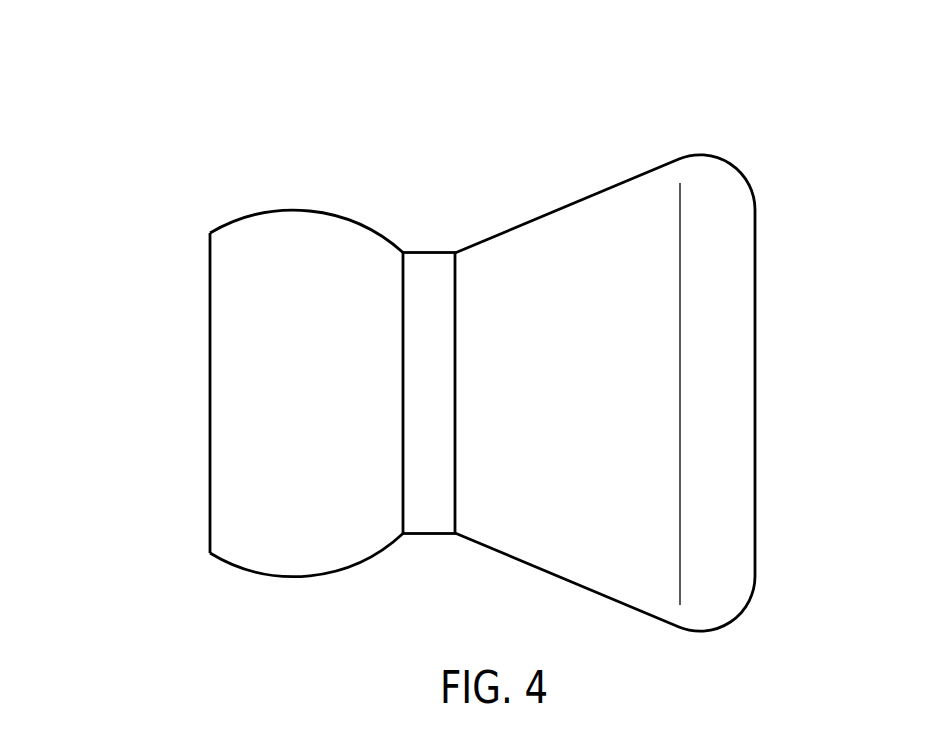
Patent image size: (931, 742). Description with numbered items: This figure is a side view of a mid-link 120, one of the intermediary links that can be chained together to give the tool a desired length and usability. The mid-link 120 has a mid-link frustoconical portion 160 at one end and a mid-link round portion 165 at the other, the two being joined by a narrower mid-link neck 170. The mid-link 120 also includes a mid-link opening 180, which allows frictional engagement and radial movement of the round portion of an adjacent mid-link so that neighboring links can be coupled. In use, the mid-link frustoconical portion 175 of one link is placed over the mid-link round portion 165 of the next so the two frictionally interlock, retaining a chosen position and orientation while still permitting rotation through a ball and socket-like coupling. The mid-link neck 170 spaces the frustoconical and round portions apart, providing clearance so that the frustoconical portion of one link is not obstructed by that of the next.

The mid-link 120 is at (113, 198).
The mid-link frustoconical portion 160 is at (710, 177).
The mid-link round portion 165 is at (298, 218).
The mid-link neck 170 is at (430, 260).
The mid-link frustoconical portion 175 is at (757, 392).
The mid-link opening 180 is at (208, 385).